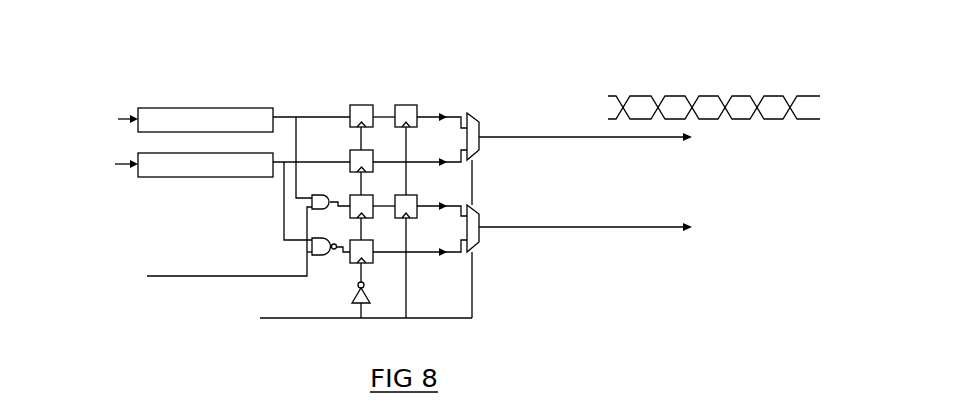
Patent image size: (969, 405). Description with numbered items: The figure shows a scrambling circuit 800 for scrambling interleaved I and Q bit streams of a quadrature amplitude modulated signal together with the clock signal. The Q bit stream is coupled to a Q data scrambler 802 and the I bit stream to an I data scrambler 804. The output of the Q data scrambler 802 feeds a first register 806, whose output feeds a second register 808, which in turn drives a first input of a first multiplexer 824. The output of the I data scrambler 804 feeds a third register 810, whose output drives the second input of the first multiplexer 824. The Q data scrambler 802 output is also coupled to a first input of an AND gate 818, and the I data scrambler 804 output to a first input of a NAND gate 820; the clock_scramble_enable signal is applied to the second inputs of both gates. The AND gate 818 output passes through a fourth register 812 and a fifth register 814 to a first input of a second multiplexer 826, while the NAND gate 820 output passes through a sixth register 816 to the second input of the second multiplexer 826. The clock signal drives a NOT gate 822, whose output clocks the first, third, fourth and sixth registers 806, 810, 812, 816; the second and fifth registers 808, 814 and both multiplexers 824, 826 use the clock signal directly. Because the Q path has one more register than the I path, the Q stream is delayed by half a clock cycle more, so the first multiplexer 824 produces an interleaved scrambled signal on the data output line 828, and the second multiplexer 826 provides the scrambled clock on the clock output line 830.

The scrambling circuit 800 is at (188, 56).
The Q data scrambler 802 is at (260, 107).
The I data scrambler 804 is at (200, 178).
The first register 806 is at (363, 105).
The second register 808 is at (408, 105).
The third register 810 is at (375, 158).
The fourth register 812 is at (374, 201).
The fifth register 814 is at (418, 201).
The sixth register 816 is at (382, 241).
The AND gate 818 is at (323, 195).
The NAND gate 820 is at (327, 235).
The NOT gate 822 is at (352, 298).
The first multiplexer 824 is at (479, 113).
The second multiplexer 826 is at (479, 214).
The data output line 828 is at (668, 139).
The clock output line 830 is at (672, 226).